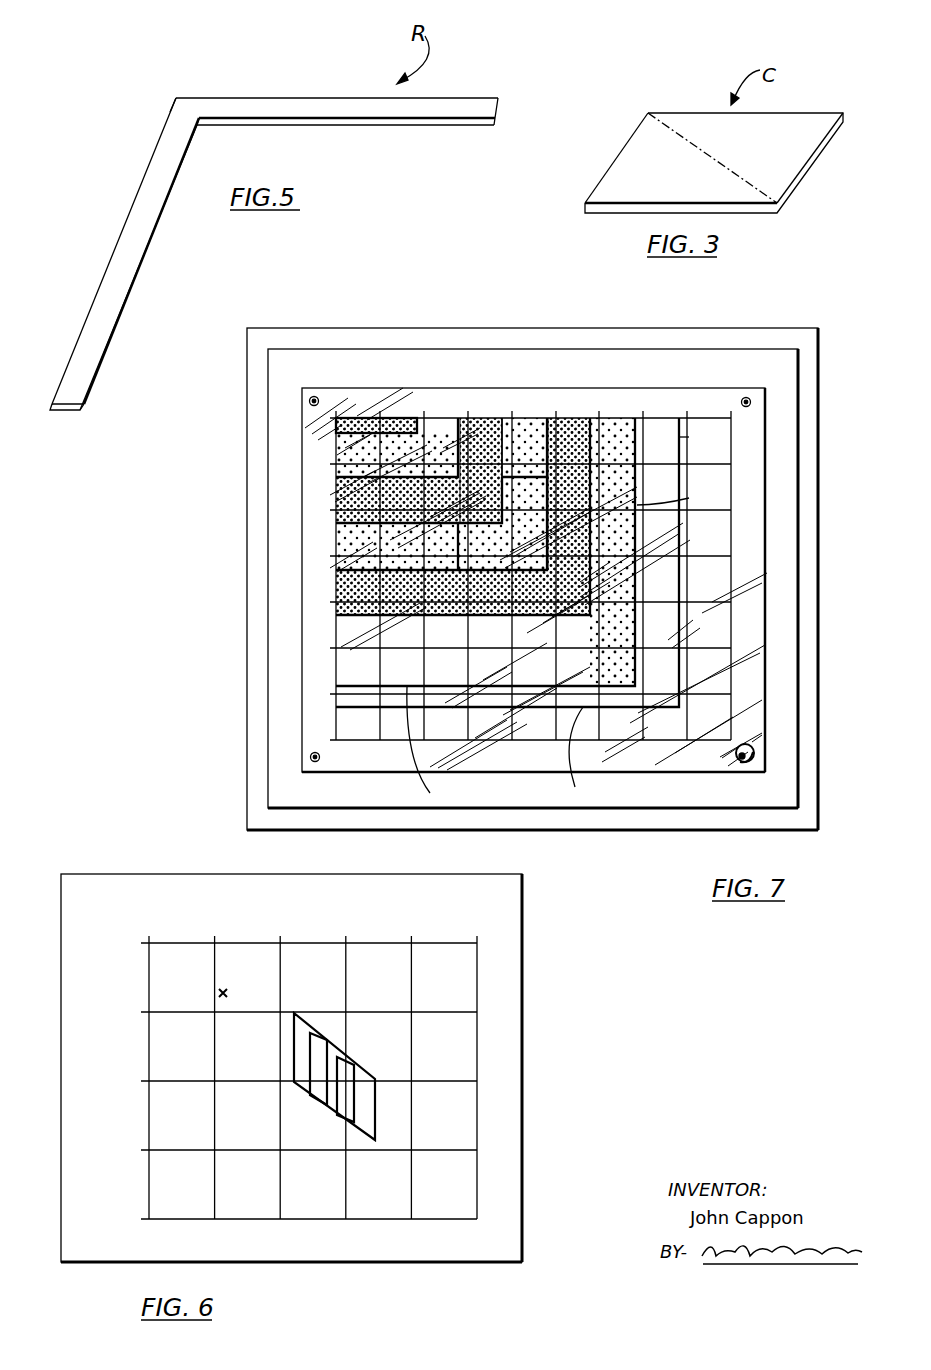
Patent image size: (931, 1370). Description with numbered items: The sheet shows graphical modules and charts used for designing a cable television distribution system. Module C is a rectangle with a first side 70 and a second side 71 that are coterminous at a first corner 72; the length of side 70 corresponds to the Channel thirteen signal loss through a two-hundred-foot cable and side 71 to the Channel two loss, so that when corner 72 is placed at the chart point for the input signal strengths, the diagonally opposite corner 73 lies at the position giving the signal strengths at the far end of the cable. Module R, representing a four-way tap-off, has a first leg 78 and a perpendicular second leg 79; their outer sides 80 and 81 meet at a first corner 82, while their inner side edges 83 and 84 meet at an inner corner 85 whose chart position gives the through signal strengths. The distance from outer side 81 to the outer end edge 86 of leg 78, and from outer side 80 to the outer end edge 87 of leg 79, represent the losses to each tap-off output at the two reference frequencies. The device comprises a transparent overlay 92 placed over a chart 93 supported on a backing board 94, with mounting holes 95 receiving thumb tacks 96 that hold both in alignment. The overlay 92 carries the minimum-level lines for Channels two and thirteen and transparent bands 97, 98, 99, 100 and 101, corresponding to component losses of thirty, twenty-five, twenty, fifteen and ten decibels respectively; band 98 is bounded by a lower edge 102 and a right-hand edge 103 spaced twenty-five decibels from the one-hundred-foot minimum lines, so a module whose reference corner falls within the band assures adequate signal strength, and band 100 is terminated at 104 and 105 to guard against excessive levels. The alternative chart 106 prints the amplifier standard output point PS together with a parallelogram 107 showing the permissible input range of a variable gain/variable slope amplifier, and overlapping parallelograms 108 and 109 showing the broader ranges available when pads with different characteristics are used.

In FIG. 3, the first side 70 is at (788, 113).
In FIG. 3, the second side 71 is at (608, 167).
In FIG. 3, the first corner 72 is at (648, 113).
In FIG. 3, the diagonally opposite corner 73 is at (779, 202).
In FIG. 5, the first leg 78 is at (436, 117).
In FIG. 5, the second leg 79 is at (138, 235).
In FIG. 5, the outer side of first leg 80 is at (311, 97).
In FIG. 5, the outer side of second leg 81 is at (95, 298).
In FIG. 5, the first corner 82 is at (176, 97).
In FIG. 5, the inner side edge of first leg 83 is at (355, 123).
In FIG. 5, the inner side edge of second leg 84 is at (137, 278).
In FIG. 5, the inner corner 85 is at (199, 117).
In FIG. 5, the outer end edge of first leg 86 is at (503, 107).
In FIG. 5, the outer end edge of second leg 87 is at (66, 410).
In FIG. 7, the transparent overlay 92 is at (768, 577).
In FIG. 7, the chart 93 is at (790, 668).
In FIG. 7, the backing board 94 is at (813, 603).
In FIG. 7, the mounting holes 95 is at (314, 396).
In FIG. 7, the thumb tacks 96 is at (748, 765).
In FIG. 7, the transparent band 97 is at (362, 417).
In FIG. 7, the transparent band 98 is at (362, 458).
In FIG. 7, the transparent band 99 is at (410, 505).
In FIG. 7, the transparent band 100 is at (488, 548).
In FIG. 7, the transparent band 101 is at (546, 598).
In FIG. 7, the lower edge of band 102 is at (337, 490).
In FIG. 7, the right-hand edge of band 103 is at (456, 440).
In FIG. 7, the band termination 104 is at (452, 545).
In FIG. 7, the band termination 105 is at (522, 467).
In FIG. 6, the alternative chart 106 is at (523, 943).
In FIG. 6, the parallelogram 107 is at (376, 1079).
In FIG. 6, the parallelogram 108 is at (325, 1108).
In FIG. 6, the parallelogram 109 is at (313, 1022).